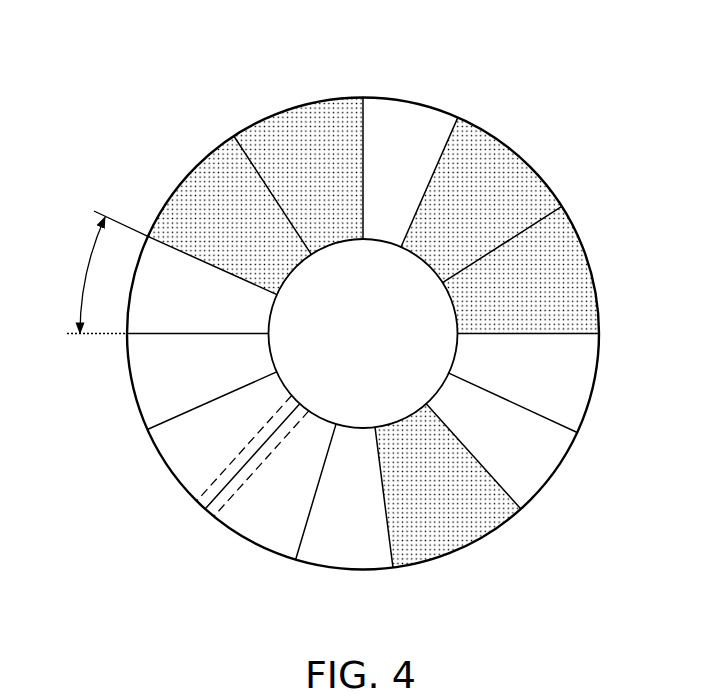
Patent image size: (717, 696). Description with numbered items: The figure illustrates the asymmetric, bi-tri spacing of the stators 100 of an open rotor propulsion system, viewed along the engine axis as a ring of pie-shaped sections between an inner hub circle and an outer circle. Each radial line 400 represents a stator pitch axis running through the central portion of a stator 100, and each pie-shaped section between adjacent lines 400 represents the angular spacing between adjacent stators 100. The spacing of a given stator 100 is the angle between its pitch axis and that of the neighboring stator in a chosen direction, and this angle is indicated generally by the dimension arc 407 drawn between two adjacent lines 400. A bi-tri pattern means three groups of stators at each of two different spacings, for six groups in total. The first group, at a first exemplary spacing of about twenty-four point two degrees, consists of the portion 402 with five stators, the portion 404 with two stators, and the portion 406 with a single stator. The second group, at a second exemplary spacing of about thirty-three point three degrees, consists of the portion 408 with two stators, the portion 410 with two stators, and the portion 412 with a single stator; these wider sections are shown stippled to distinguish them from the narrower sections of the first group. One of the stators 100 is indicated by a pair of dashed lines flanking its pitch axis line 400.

The stator 100 is at (213, 484).
The stator pitch axis line 400 is at (368, 99).
The portion of stators 402 is at (153, 474).
The portion of stators 404 is at (610, 381).
The portion of stators 406 is at (417, 86).
The stator spacing 407 is at (81, 273).
The portion of stators 408 is at (194, 147).
The portion of stators 410 is at (598, 241).
The portion of stators 412 is at (479, 560).